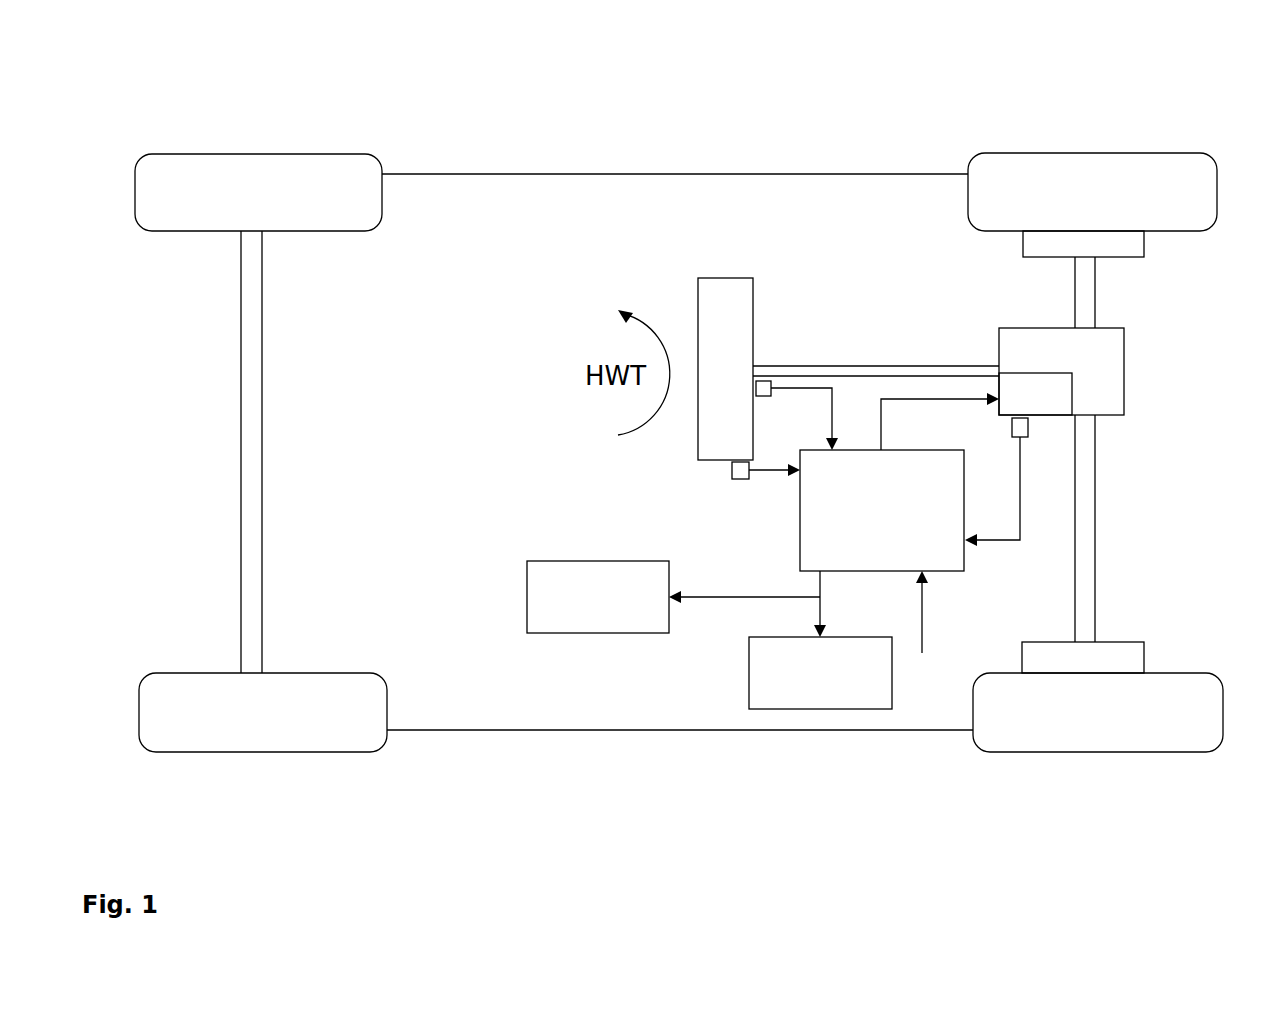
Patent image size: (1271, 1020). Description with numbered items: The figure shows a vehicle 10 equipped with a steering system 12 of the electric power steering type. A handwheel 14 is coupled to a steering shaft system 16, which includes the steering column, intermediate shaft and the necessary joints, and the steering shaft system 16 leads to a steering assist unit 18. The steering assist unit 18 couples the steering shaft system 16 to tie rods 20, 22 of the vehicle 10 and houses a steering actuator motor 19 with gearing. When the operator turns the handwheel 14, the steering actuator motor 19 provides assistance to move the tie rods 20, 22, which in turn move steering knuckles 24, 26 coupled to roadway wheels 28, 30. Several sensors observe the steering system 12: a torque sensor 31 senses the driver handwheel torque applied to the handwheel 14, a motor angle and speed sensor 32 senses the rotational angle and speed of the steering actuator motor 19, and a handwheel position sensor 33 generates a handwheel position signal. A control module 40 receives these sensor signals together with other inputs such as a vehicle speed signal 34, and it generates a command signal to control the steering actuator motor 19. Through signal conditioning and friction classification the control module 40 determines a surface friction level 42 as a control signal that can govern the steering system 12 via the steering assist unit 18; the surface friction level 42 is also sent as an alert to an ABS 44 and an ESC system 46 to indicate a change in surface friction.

The vehicle 10 is at (722, 68).
The steering system 12 is at (848, 252).
The handwheel 14 is at (725, 278).
The steering shaft system 16 is at (840, 366).
The steering assist unit 18 is at (1125, 365).
The steering actuator motor 19 is at (1035, 394).
The tie rod 20 is at (1096, 305).
The tie rod 22 is at (1096, 500).
The steering knuckle 24 is at (1023, 257).
The steering knuckle 26 is at (1052, 642).
The roadway wheel 28 is at (1135, 153).
The roadway wheel 30 is at (1156, 673).
The torque sensor 31 is at (762, 396).
The motor angle and speed sensor 32 is at (1028, 425).
The handwheel position sensor 33 is at (738, 479).
The vehicle speed signal 34 is at (924, 631).
The control module 40 is at (898, 450).
The surface friction level 42 is at (820, 613).
The ABS 44 is at (533, 561).
The ESC system 46 is at (749, 672).